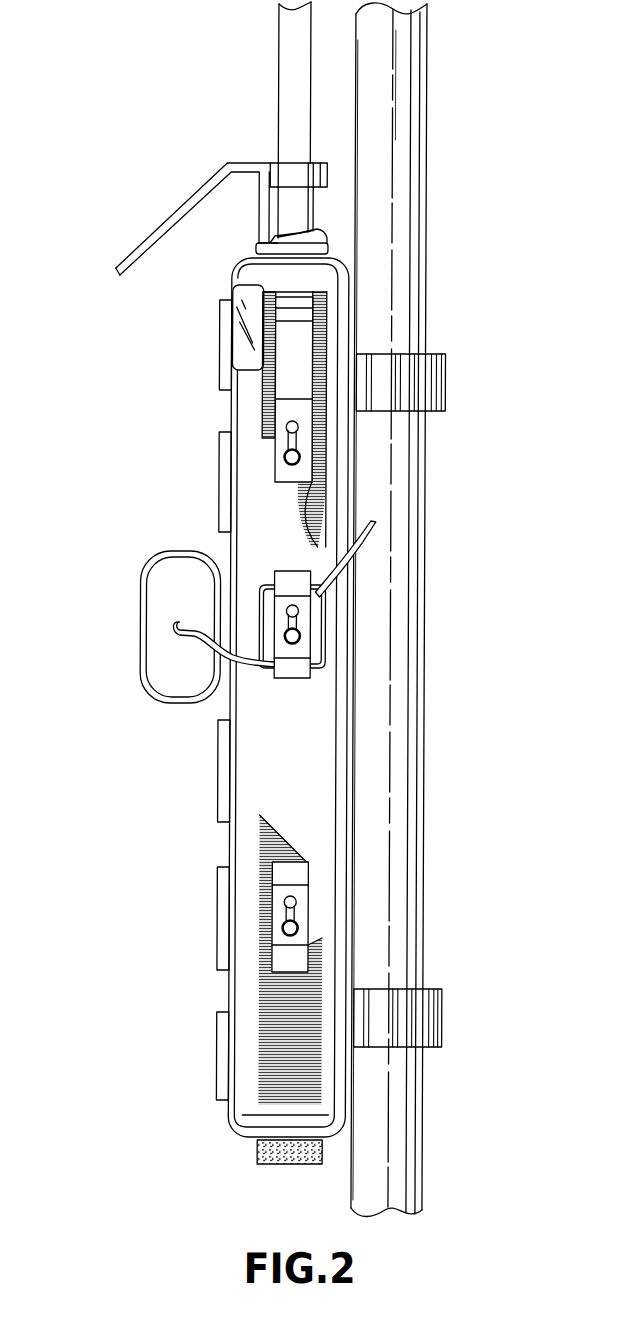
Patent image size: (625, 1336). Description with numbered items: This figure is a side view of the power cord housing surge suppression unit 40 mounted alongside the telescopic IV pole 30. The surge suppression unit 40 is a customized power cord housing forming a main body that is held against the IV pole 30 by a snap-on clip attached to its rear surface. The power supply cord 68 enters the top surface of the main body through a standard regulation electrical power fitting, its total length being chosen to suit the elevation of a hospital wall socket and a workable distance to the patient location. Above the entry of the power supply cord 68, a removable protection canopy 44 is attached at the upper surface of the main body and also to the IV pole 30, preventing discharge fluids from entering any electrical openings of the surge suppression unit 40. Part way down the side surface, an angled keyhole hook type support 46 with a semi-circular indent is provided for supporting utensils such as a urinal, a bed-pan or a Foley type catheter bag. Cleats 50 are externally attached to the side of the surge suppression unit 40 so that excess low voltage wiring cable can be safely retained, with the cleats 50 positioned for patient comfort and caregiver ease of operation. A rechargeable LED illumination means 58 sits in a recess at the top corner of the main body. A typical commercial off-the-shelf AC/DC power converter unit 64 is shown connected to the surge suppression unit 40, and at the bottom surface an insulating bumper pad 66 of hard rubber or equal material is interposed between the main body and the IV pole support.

The telescopic IV pole 30 is at (429, 131).
The power supply cord 68 is at (278, 94).
The removable protection canopy 44 is at (148, 230).
The power cord housing surge suppression unit 40 is at (230, 996).
The LED illumination means 58 is at (262, 289).
The keyhole hook type support 46 is at (317, 332).
The cleats 50 is at (313, 674).
The AC/DC power converter unit 64 is at (143, 625).
The insulating/bumper pad 66 is at (262, 1164).